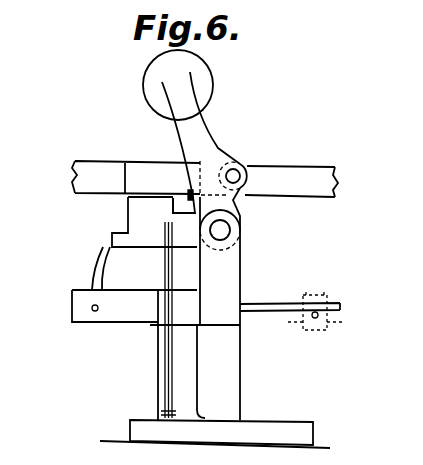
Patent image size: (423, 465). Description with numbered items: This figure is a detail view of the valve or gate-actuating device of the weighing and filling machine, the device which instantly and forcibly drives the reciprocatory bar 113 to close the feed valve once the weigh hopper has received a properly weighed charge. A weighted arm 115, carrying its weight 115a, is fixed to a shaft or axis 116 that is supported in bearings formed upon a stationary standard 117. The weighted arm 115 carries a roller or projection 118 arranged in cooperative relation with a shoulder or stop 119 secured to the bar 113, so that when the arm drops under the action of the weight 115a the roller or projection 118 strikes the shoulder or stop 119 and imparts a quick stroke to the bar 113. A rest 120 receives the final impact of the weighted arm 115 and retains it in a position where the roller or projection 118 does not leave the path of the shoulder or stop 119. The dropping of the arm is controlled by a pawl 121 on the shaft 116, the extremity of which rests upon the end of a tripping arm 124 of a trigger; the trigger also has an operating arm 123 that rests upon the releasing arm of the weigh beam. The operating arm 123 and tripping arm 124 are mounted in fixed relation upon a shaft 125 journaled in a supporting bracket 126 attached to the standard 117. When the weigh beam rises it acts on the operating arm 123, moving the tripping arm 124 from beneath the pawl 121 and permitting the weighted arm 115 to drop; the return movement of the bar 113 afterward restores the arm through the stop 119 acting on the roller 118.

The reciprocatory bar 113 is at (205, 179).
The weighted arm 115 is at (205, 138).
The weight 115a is at (202, 83).
The axis 116 is at (225, 230).
The stationary standard 117 is at (183, 378).
The roller or projection 118 is at (242, 168).
The shoulder or stop 119 is at (190, 194).
The rest 120 is at (160, 285).
The pawl 121 is at (142, 214).
The operating arm 123 is at (267, 304).
The tripping arm 124 is at (103, 262).
The shaft 125 is at (95, 311).
The supporting bracket 126 is at (72, 303).